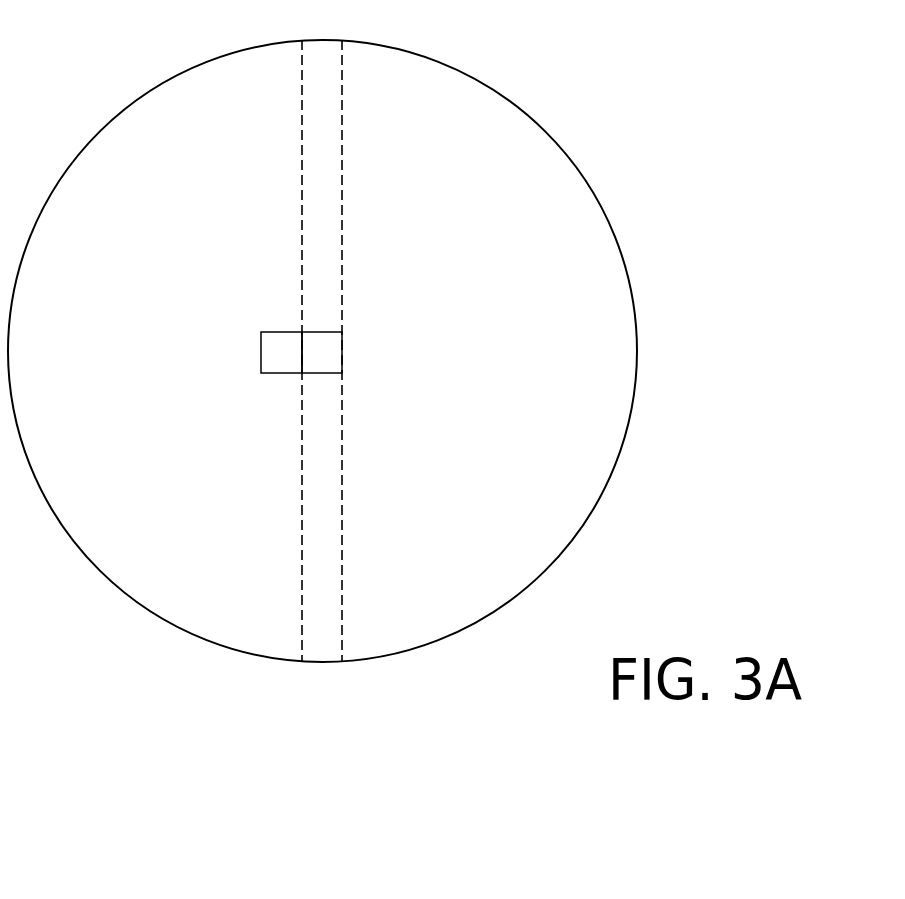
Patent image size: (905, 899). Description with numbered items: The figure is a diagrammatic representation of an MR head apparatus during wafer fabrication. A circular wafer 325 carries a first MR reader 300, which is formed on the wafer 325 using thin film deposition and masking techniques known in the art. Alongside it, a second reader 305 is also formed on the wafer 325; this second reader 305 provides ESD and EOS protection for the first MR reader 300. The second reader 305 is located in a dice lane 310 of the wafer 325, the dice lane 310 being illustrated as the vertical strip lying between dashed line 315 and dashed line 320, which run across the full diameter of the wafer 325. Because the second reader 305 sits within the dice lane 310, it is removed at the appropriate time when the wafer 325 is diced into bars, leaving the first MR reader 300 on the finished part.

The first MR reader 300 is at (282, 352).
The second reader 305 is at (322, 352).
The dice lane 310 is at (322, 582).
The dashed line 315 is at (302, 462).
The dashed line 320 is at (342, 462).
The wafer 325 is at (572, 540).